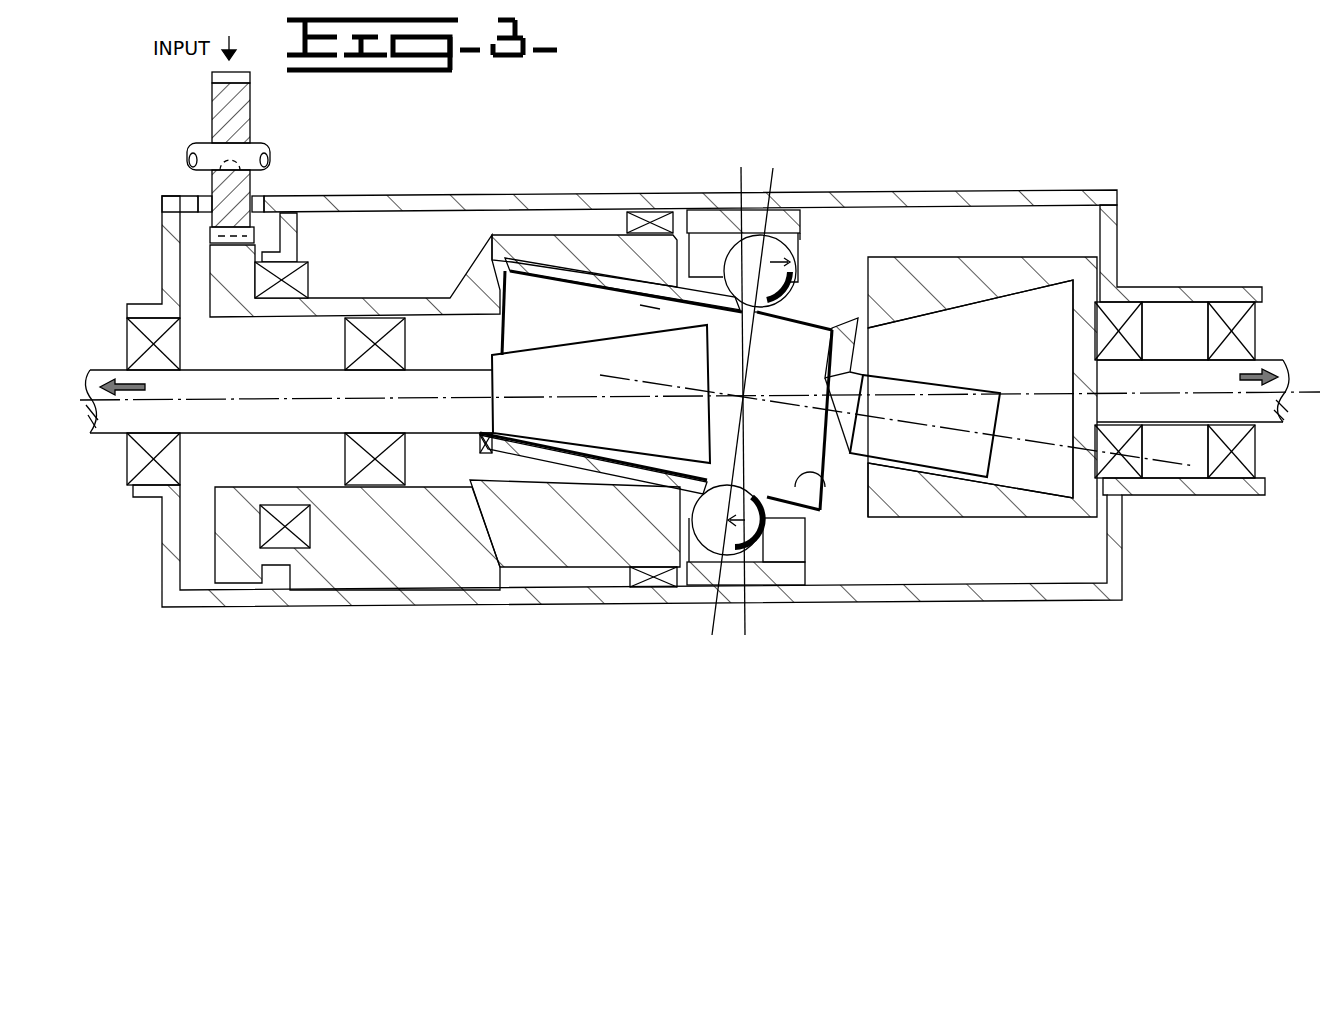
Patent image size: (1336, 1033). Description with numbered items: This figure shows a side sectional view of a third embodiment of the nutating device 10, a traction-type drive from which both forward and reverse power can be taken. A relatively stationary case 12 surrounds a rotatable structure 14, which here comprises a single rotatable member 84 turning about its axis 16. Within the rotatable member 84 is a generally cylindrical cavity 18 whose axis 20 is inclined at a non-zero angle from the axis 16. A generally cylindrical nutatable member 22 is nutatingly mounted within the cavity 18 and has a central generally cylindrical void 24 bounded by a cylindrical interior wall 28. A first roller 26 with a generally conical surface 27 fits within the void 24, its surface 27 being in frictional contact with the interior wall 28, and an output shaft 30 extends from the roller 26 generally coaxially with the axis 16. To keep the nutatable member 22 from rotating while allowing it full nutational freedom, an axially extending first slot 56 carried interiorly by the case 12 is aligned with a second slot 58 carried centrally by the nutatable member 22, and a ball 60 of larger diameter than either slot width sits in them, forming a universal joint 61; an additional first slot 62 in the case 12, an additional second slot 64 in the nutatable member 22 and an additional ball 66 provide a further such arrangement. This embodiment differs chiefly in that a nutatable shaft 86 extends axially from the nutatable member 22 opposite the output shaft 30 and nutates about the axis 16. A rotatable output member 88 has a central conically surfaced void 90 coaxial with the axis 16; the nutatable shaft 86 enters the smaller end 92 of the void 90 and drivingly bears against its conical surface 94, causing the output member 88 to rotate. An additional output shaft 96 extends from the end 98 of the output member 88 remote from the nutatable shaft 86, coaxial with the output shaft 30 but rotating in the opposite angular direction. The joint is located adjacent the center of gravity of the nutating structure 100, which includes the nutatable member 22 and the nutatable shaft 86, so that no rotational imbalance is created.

The nutating device 10 is at (1075, 178).
The case 12 is at (634, 188).
The rotatable structure 14 is at (506, 224).
The axis 16 is at (1033, 393).
The cavity 18 is at (612, 277).
The axis of the cavity 20 is at (1010, 437).
The nutatable member 22 is at (840, 306).
The void 24 is at (560, 327).
The first roller 26 is at (635, 426).
The surface 27 is at (647, 442).
The interior wall 28 is at (640, 305).
The output shaft 30 is at (318, 391).
The first slot 56 is at (705, 246).
The second slot 58 is at (773, 327).
The ball 60 is at (794, 266).
The universal joint 61 is at (812, 238).
The additional first slot 62 is at (780, 555).
The additional second slot 64 is at (757, 487).
The additional ball 66 is at (762, 532).
The rotatable member 84 is at (575, 232).
The nutatable shaft 86 is at (962, 422).
The rotatable output member 88 is at (975, 254).
The conically surfaced void 90 is at (999, 352).
The smaller end 92 is at (857, 348).
The conical surface 94 is at (1024, 478).
The additional output shaft 96 is at (1273, 368).
The end 98 is at (1119, 500).
The nutating structure 100 is at (843, 306).